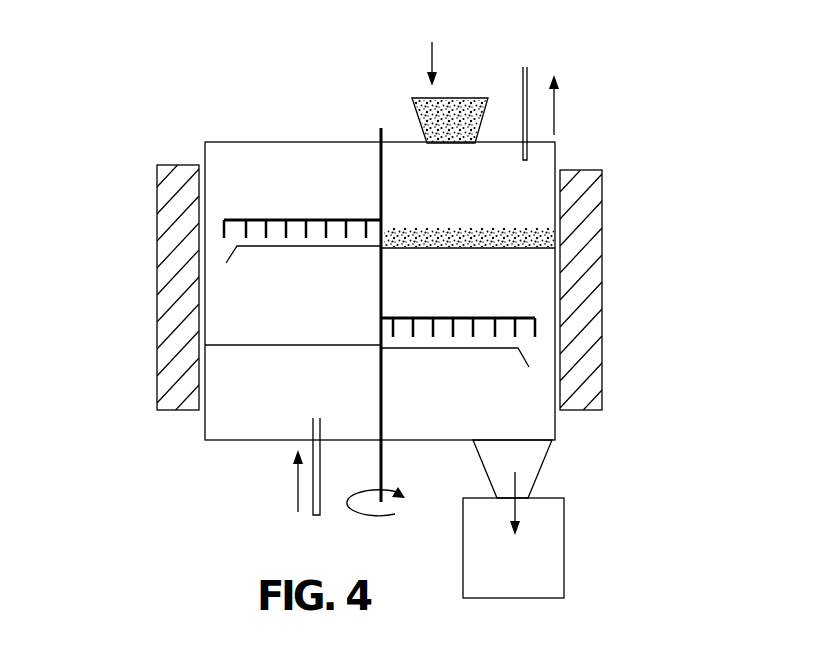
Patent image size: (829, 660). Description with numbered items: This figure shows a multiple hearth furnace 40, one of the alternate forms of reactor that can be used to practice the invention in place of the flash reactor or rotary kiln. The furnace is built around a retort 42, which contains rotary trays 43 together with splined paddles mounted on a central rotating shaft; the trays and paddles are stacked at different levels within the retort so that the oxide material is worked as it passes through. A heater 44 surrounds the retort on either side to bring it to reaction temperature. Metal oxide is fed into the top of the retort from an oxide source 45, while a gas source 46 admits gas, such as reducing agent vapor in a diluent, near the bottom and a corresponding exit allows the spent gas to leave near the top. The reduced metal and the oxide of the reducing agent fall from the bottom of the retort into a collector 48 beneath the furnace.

The multiple hearth furnace 40 is at (192, 122).
The retort 42 is at (305, 142).
The rotary trays 43 is at (265, 247).
The heater 44 is at (157, 317).
The oxide source 45 is at (463, 98).
The gas source 46 is at (318, 452).
The collector 48 is at (564, 540).